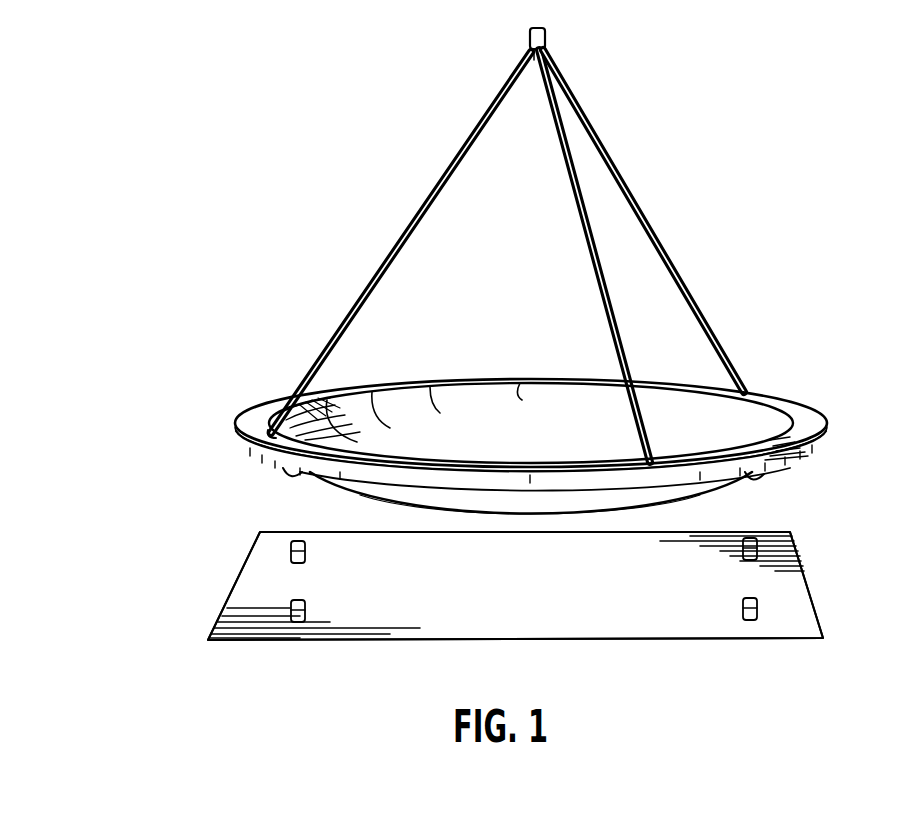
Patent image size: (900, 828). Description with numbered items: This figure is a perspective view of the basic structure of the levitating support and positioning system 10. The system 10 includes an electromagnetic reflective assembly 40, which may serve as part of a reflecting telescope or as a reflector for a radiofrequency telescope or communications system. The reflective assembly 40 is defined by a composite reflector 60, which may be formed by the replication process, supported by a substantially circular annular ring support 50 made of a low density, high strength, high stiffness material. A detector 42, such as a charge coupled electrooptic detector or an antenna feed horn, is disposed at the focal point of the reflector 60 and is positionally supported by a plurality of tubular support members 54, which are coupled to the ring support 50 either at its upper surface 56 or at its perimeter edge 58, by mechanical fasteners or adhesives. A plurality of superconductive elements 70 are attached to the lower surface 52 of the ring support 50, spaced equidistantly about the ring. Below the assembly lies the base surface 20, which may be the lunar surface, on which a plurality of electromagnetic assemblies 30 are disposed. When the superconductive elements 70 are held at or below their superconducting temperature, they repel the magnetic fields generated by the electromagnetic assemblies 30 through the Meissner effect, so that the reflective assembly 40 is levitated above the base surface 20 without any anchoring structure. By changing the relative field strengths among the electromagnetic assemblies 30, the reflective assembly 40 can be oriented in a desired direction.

The system 10 is at (186, 508).
The base surface 20 is at (638, 622).
The electromagnetic assemblies 30 is at (290, 548).
The reflective assembly 40 is at (298, 306).
The detector 42 is at (548, 43).
The annular ring support 50 is at (238, 425).
The lower surface 52 is at (240, 452).
The tubular support members 54 is at (468, 150).
The upper surface 56 is at (793, 407).
The perimeter edge 58 is at (827, 433).
The composite reflector 60 is at (520, 398).
The superconductive elements 70 is at (285, 475).